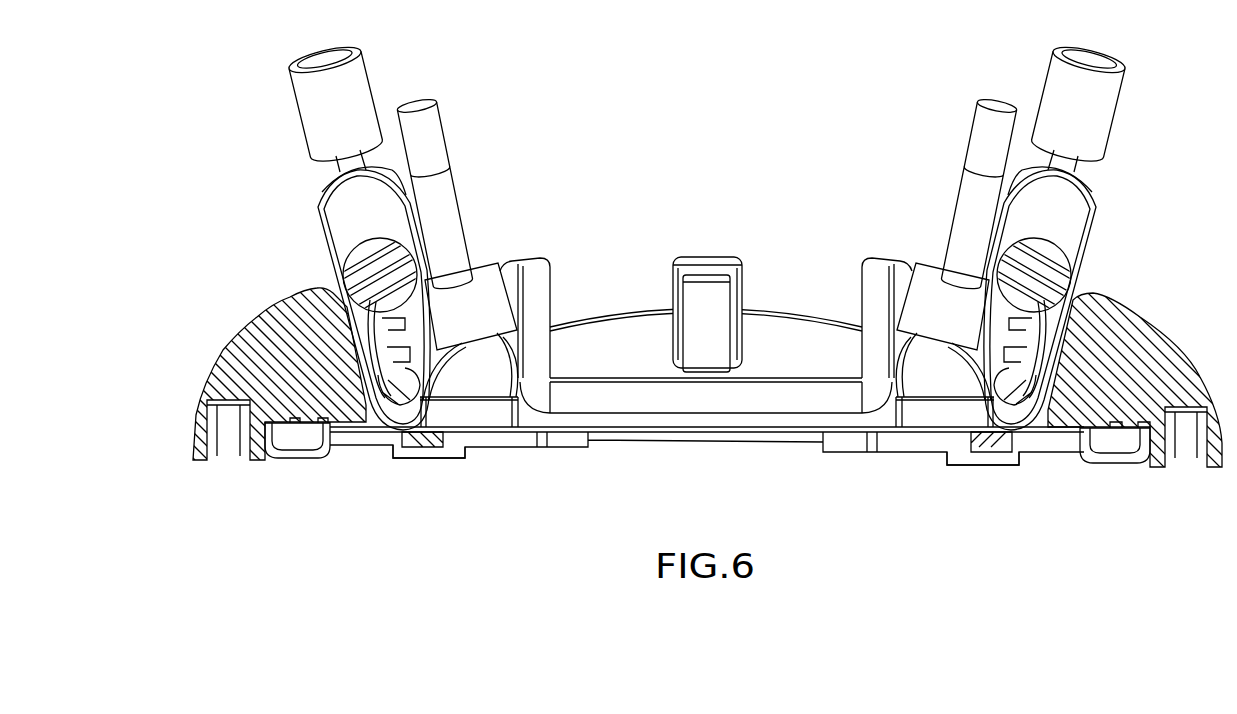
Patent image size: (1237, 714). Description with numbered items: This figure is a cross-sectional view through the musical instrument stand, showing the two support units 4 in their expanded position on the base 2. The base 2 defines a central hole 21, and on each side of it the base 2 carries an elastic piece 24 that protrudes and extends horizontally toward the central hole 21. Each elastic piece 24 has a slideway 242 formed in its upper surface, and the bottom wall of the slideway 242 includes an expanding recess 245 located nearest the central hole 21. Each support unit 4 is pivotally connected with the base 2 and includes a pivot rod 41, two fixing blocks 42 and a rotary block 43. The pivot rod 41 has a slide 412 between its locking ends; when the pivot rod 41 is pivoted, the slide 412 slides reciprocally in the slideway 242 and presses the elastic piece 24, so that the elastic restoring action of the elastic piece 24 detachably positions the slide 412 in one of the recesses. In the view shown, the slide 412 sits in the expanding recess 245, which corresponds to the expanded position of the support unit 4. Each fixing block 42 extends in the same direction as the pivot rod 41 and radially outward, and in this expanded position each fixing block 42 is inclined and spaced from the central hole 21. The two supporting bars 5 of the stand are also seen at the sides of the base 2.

The base 2 is at (790, 301).
The central hole 21 is at (613, 333).
The elastic piece 24 is at (410, 448).
The slideway 242 is at (410, 458).
The expanding recess 245 is at (983, 458).
The support unit 4 is at (300, 178).
The pivot rod 41 is at (370, 418).
The slide 412 is at (433, 448).
The fixing block 42 is at (312, 105).
The rotary block 43 is at (453, 217).
The supporting bar 5 is at (1117, 471).